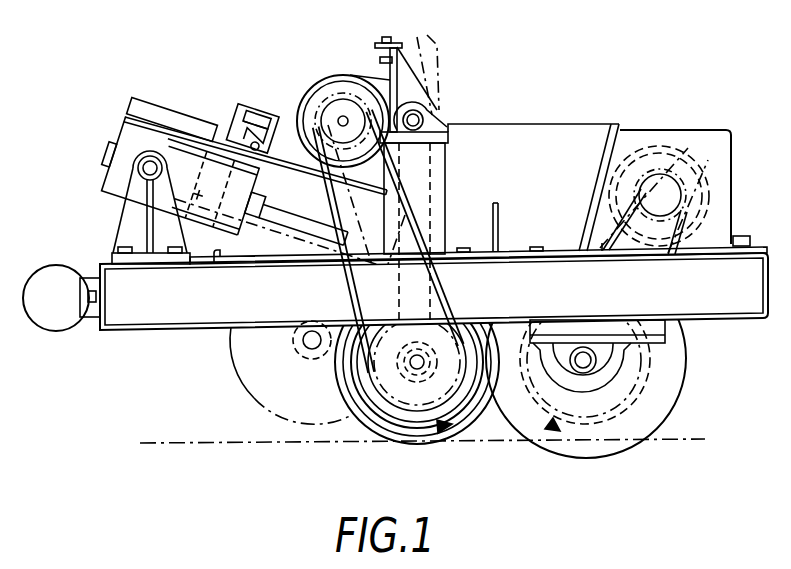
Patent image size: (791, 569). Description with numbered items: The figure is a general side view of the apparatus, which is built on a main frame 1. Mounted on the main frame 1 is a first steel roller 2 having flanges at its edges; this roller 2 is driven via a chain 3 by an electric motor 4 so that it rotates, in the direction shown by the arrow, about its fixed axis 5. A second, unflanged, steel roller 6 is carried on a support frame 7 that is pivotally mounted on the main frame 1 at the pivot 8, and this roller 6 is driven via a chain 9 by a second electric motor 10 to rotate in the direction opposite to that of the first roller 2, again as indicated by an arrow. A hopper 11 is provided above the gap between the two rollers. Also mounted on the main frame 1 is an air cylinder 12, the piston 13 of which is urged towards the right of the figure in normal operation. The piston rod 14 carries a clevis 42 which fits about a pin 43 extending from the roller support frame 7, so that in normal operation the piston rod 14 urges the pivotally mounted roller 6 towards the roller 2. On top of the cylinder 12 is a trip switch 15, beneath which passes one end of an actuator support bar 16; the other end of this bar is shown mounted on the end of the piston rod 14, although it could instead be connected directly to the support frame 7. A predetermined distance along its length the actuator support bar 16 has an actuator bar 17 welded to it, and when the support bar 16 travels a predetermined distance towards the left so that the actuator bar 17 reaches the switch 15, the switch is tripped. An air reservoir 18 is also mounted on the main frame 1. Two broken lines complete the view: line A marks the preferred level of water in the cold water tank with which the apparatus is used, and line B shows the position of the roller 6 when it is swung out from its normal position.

The main frame 1 is at (158, 306).
The first steel roller 2 is at (660, 391).
The chain 3 is at (702, 218).
The electric motor 4 is at (706, 172).
The fixed axis 5 is at (583, 352).
The second steel roller 6 is at (402, 436).
The support frame 7 is at (423, 183).
The pivot 8 is at (432, 110).
The chain 9 is at (381, 183).
The electric motor 10 is at (308, 84).
The hopper 11 is at (517, 124).
The air cylinder 12 is at (128, 133).
The piston 13 is at (195, 195).
The piston rod 14 is at (293, 222).
The trip switch 15 is at (252, 117).
The actuator support bar 16 is at (311, 179).
The actuator bar 17 is at (294, 133).
The air reservoir 18 is at (54, 280).
The clevis 42 is at (370, 255).
The pin 43 is at (390, 257).
The preferred water level A is at (203, 443).
The swung-out roller position B is at (231, 373).